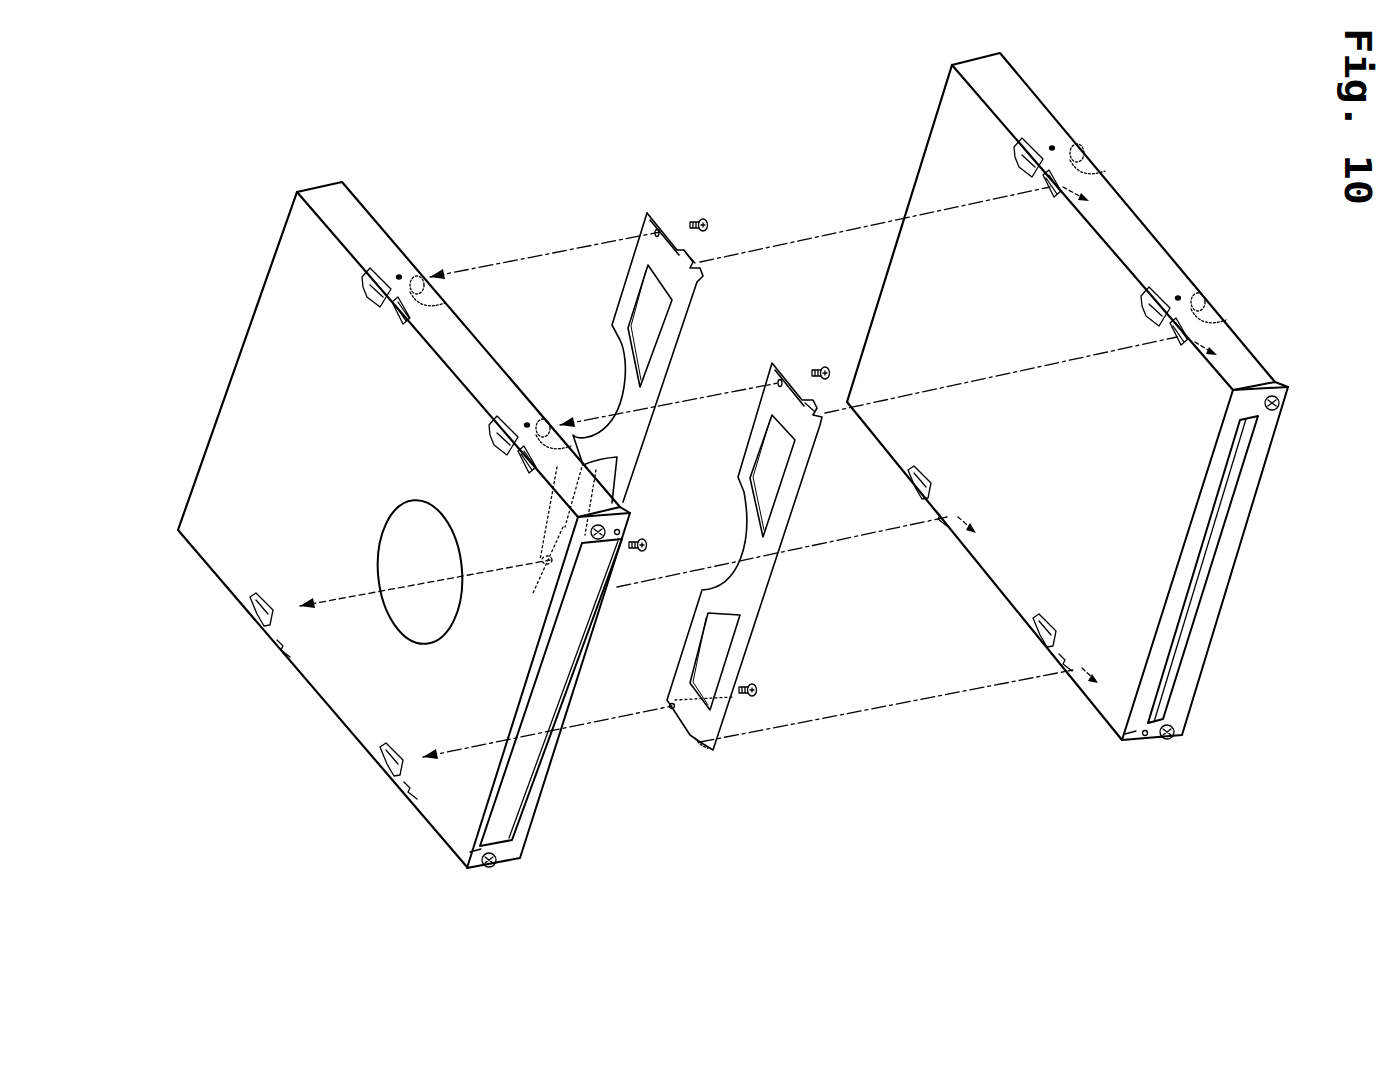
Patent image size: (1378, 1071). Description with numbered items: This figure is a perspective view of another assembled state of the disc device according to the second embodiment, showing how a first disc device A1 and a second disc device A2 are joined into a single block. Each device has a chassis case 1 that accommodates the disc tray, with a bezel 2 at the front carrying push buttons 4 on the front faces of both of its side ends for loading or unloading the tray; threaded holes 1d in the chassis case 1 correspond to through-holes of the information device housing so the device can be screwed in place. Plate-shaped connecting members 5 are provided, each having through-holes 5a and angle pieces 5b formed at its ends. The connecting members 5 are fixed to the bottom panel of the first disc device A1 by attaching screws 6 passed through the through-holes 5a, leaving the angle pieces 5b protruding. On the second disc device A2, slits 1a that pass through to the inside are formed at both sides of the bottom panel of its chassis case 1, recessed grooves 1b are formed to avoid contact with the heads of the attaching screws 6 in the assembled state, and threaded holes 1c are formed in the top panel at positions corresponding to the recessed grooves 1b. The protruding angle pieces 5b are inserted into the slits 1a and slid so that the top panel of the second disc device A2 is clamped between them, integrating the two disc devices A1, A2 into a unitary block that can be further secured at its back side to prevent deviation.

The first disc device A1 is at (226, 366).
The second disc device A2 is at (1042, 396).
The chassis case 1 is at (895, 300).
The slit 1a is at (397, 323).
The recessed groove 1b is at (362, 292).
The threaded hole 1c is at (440, 302).
The threaded hole 1d is at (402, 272).
The bezel 2 is at (542, 764).
The push button 4 is at (622, 510).
The connecting member 5 is at (637, 418).
The through-hole 5a is at (652, 229).
The angle piece 5b is at (700, 266).
The attaching screw 6 is at (704, 220).